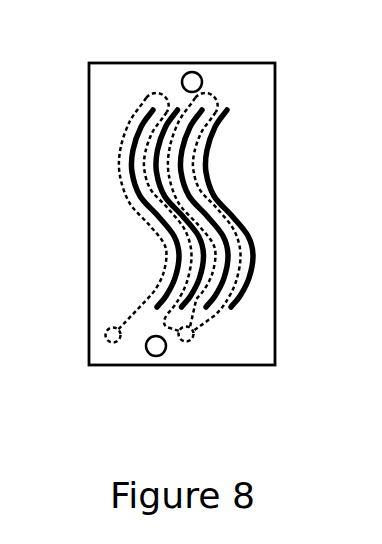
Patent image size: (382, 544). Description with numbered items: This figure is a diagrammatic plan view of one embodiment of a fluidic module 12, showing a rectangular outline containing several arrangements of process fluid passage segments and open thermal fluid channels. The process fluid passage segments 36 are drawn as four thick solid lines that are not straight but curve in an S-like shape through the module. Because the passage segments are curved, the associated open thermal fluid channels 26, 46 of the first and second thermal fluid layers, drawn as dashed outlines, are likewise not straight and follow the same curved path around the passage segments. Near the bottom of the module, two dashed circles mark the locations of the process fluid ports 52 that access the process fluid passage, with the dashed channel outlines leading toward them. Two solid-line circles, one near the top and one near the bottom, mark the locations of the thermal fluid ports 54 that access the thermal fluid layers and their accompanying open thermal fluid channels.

The thermal energy device / panel 12 is at (122, 407).
The open thermal fluid channel 26 is at (132, 212).
The open thermal fluid channel 46 is at (200, 184).
The process fluid passage segments 36 is at (186, 248).
The process fluid ports 52 is at (106, 339).
The thermal fluid ports 54 is at (192, 72).